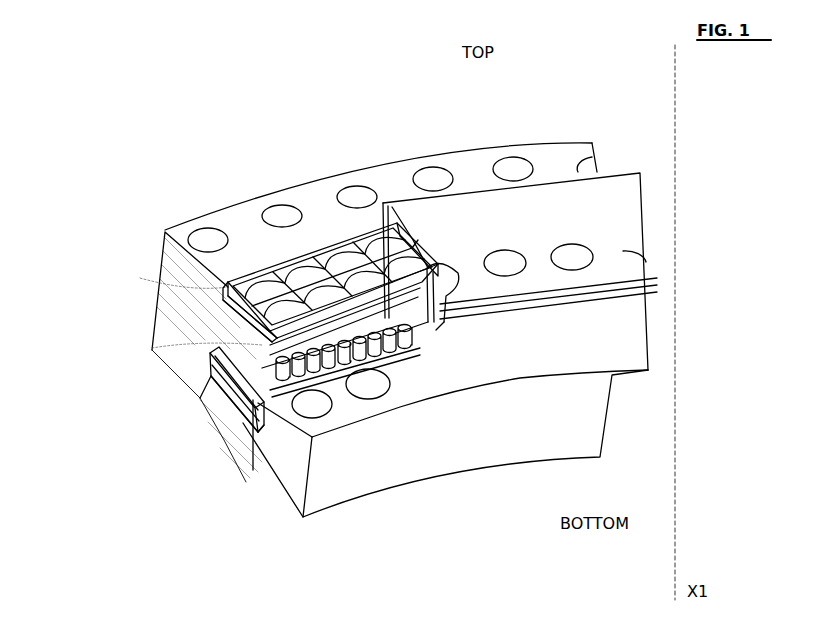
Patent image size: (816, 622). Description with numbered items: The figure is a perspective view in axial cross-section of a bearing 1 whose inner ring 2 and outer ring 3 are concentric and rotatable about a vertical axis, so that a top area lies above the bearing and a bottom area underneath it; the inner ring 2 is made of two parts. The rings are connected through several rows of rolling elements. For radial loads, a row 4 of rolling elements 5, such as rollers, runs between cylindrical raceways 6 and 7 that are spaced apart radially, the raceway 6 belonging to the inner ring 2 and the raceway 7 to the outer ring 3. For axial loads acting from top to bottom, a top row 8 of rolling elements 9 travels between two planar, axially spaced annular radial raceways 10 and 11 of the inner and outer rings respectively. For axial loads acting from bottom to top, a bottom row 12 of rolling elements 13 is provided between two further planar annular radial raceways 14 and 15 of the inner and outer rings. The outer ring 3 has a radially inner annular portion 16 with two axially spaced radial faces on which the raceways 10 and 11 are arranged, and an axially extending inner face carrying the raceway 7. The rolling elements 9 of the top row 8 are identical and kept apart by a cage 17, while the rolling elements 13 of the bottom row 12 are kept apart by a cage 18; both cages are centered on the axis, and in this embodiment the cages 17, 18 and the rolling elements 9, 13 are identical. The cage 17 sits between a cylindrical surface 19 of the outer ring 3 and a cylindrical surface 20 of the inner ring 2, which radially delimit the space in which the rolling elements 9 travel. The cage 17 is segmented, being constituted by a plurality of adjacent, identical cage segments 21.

The bearing 1 is at (148, 146).
The inner ring 2 is at (628, 350).
The outer ring 3 is at (548, 157).
The row 4 is at (315, 372).
The rolling elements 5 is at (358, 400).
The raceway 6 is at (408, 345).
The raceway 7 is at (215, 413).
The top row 8 is at (262, 284).
The rolling elements 9 is at (291, 268).
The annular radial raceway 10 is at (385, 280).
The annular radial raceway 11 is at (225, 324).
The bottom row 12 is at (200, 398).
The rolling elements 13 is at (212, 370).
The annular radial raceway 14 is at (253, 400).
The annular radial raceway 15 is at (230, 394).
The radially inner annular portion 16 is at (222, 350).
The cage 17 is at (328, 262).
The cage 18 is at (243, 432).
The cylindrical surface 19 is at (230, 300).
The cylindrical surface 20 is at (400, 355).
The cage segments 21 is at (228, 330).